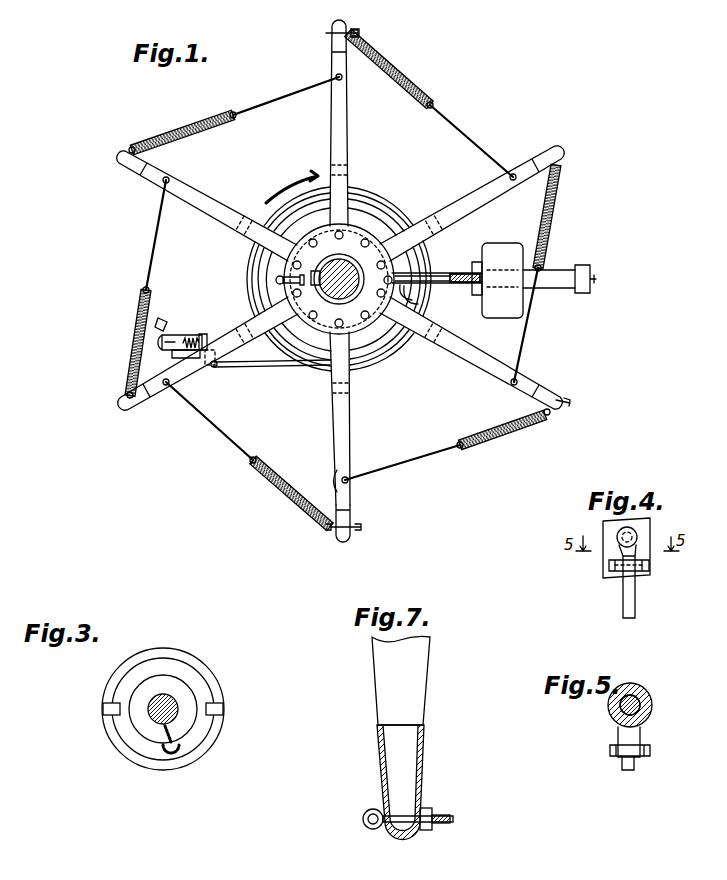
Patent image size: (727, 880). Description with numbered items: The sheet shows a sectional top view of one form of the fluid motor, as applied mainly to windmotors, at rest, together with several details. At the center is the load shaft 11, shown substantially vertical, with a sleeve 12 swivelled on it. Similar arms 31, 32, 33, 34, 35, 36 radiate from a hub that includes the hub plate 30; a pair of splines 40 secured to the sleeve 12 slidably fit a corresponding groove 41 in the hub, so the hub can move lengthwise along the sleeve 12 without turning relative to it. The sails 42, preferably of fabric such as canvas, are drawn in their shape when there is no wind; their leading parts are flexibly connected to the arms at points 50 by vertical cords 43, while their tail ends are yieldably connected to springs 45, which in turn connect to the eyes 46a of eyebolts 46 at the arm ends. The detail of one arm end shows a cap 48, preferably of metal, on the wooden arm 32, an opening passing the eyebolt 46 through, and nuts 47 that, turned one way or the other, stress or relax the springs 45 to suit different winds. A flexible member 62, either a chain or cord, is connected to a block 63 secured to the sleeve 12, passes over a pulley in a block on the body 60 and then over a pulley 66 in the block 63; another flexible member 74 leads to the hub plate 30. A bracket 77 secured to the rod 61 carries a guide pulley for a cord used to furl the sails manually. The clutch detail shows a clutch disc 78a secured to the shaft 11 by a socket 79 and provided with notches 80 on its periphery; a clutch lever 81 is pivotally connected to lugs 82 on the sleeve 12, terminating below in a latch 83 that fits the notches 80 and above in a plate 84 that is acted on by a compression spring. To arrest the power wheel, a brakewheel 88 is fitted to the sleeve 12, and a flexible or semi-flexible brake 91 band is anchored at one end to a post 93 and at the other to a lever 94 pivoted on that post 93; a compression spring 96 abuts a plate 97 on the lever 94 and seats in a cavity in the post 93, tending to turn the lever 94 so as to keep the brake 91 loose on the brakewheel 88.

In FIG. 1, the load shaft 11 is at (348, 290).
In FIG. 3, the load shaft 11 is at (157, 697).
In FIG. 5, the load shaft 11 is at (637, 698).
In FIG. 1, the sleeve 12 is at (326, 305).
In FIG. 4, the sleeve 12 is at (603, 560).
In FIG. 5, the sleeve 12 is at (652, 705).
In FIG. 1, the hub plate 30 is at (352, 222).
In FIG. 1, the arm 31 is at (197, 372).
In FIG. 1, the arm 32 is at (349, 418).
In FIG. 7, the arm 32 is at (424, 686).
In FIG. 1, the arm 33 is at (469, 363).
In FIG. 1, the arm 34 is at (462, 211).
In FIG. 1, the arm 35 is at (334, 140).
In FIG. 1, the arm 36 is at (222, 206).
In FIG. 1, the splines 40 is at (290, 291).
In FIG. 1, the groove 41 is at (385, 228).
In FIG. 1, the sails 42 is at (292, 104).
In FIG. 1, the vertical cords 43 is at (340, 468).
In FIG. 1, the springs 45 is at (198, 130).
In FIG. 1, the eyebolts 46 is at (334, 29).
In FIG. 7, the eyebolts 46 is at (449, 816).
In FIG. 1, the eyes 46a is at (354, 30).
In FIG. 7, the eyes 46a is at (368, 827).
In FIG. 7, the nuts 47 is at (428, 830).
In FIG. 1, the cap 48 is at (550, 412).
In FIG. 7, the cap 48 is at (421, 774).
In FIG. 1, the points 50 is at (350, 483).
In FIG. 1, the body 60 is at (514, 239).
In FIG. 1, the rod 61 is at (560, 268).
In FIG. 1, the flexible member 62 is at (436, 272).
In FIG. 1, the block 63 is at (413, 293).
In FIG. 1, the pulley 66 is at (410, 302).
In FIG. 1, the flexible member 74 is at (276, 281).
In FIG. 1, the bracket 77 is at (588, 290).
In FIG. 3, the clutch disc 78a is at (106, 688).
In FIG. 3, the socket 79 is at (190, 690).
In FIG. 3, the notches 80 is at (101, 709).
In FIG. 4, the clutch lever 81 is at (630, 556).
In FIG. 5, the clutch lever 81 is at (641, 736).
In FIG. 4, the lugs 82 is at (641, 573).
In FIG. 5, the lugs 82 is at (645, 753).
In FIG. 4, the latch 83 is at (636, 606).
In FIG. 5, the latch 83 is at (632, 771).
In FIG. 4, the plate 84 is at (633, 531).
In FIG. 1, the brakewheel 88 is at (362, 366).
In FIG. 1, the brake 91 is at (268, 364).
In FIG. 1, the post 93 is at (174, 348).
In FIG. 1, the lever 94 is at (180, 358).
In FIG. 1, the compression spring 96 is at (192, 338).
In FIG. 1, the plate 97 is at (310, 284).